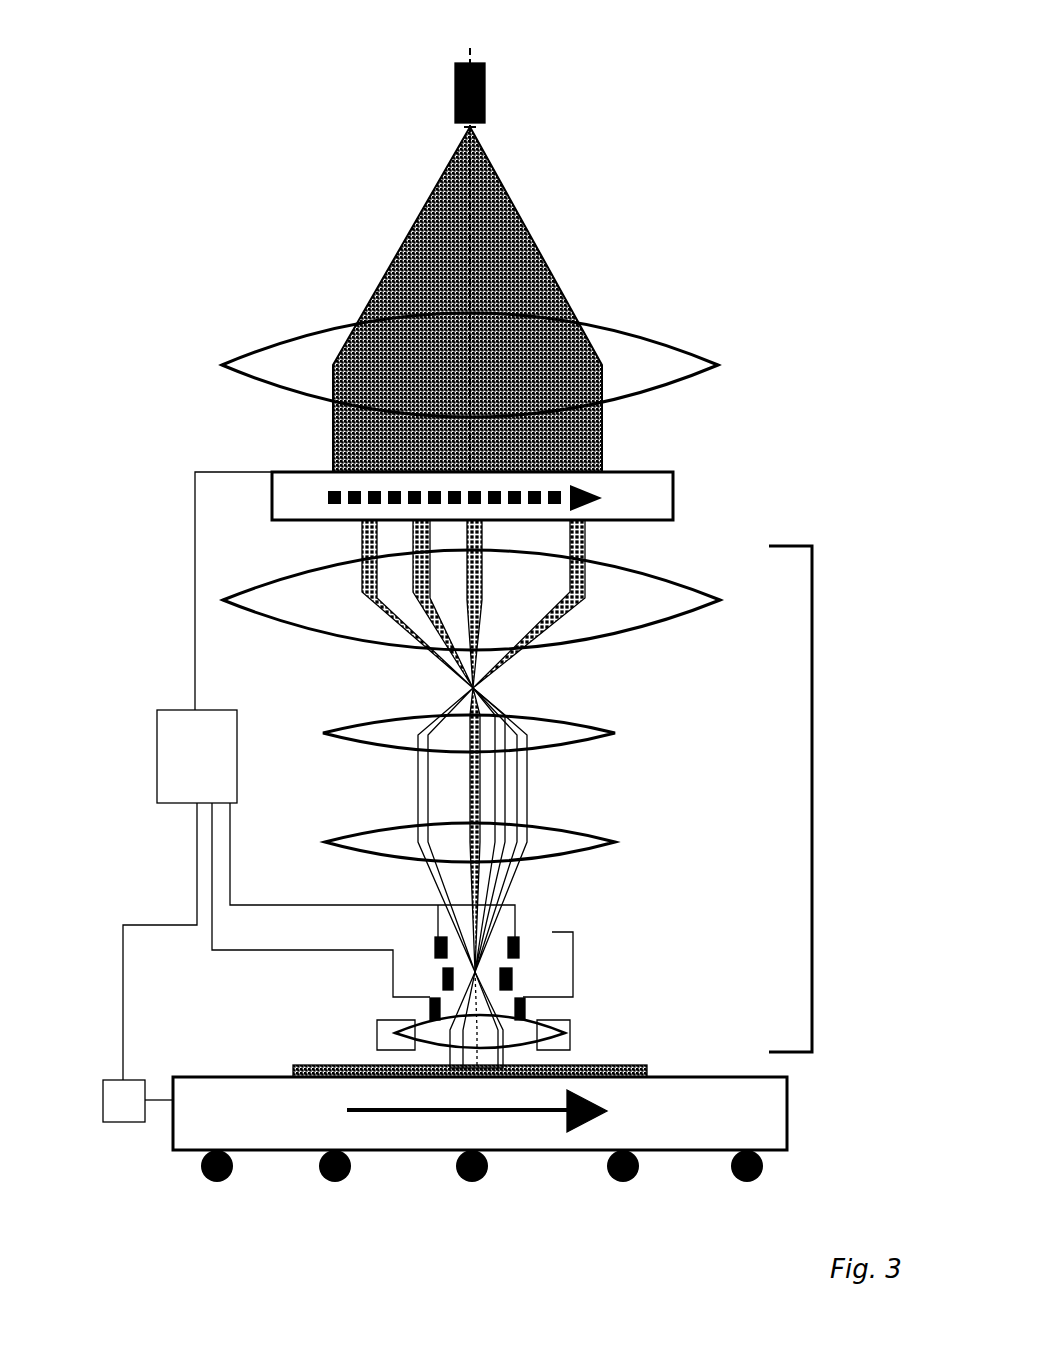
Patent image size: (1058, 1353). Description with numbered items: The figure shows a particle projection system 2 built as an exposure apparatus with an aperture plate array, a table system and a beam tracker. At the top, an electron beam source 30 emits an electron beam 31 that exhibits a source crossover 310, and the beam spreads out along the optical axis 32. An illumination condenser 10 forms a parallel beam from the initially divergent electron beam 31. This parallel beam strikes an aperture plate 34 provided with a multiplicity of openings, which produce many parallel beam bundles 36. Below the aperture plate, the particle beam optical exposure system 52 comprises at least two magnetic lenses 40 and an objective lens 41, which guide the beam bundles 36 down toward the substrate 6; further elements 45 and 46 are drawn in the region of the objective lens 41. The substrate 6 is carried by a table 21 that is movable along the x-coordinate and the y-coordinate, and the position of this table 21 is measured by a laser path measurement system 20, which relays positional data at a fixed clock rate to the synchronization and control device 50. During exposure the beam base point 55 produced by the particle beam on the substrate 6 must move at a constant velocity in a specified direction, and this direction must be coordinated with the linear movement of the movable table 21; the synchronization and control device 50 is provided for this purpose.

The particle projection system 2 is at (798, 486).
The substrate 6 is at (328, 1063).
The illumination condenser 10 is at (298, 335).
The laser path measurement system 20 is at (122, 1100).
The table 21 is at (765, 1113).
The electron beam source 30 is at (487, 73).
The source crossover 310 is at (467, 128).
The electron beam 31 is at (533, 283).
The optical axis 32 is at (472, 218).
The aperture plate 34 is at (647, 490).
The parallel beam bundles 36 is at (478, 573).
The magnetic lenses 40 is at (590, 733).
The objective lens 41 is at (573, 972).
The lens actuators 45 is at (430, 1008).
The deflector elements 46 is at (435, 947).
The synchronization and control device 50 is at (190, 737).
The particle beam optical exposure system 52 is at (806, 780).
The beam base point 55 is at (460, 1073).